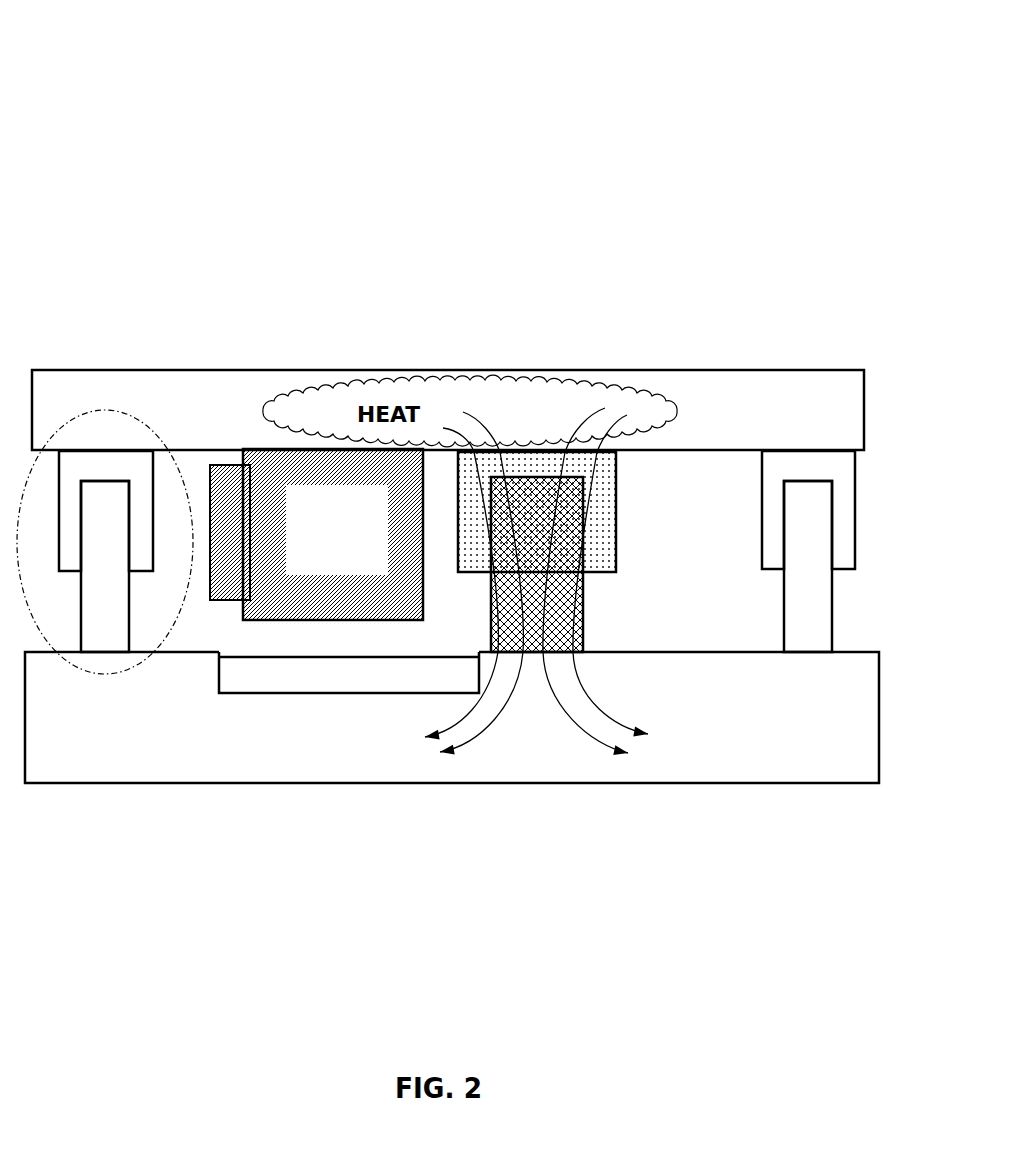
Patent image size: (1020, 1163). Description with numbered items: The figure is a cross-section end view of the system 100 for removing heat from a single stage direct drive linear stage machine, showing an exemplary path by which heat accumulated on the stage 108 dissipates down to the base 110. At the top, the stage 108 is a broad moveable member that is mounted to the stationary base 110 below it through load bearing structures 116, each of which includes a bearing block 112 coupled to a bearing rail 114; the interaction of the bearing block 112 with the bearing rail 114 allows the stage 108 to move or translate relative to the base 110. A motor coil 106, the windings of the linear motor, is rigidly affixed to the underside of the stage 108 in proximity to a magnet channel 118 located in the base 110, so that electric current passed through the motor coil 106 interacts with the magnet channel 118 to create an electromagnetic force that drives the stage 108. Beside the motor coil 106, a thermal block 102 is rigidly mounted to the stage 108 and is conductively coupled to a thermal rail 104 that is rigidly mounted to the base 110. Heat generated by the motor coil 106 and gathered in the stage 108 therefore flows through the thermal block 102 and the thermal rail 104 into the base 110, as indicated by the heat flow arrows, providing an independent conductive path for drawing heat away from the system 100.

The system 100 is at (186, 128).
The thermal block 102 is at (616, 512).
The thermal rail 104 is at (583, 590).
The motor coil 106 is at (343, 620).
The stage 108 is at (800, 370).
The base 110 is at (807, 783).
The bearing block 112 is at (870, 542).
The bearing rail 114 is at (870, 599).
The load bearing structure 116 is at (82, 668).
The magnet channel 118 is at (308, 693).